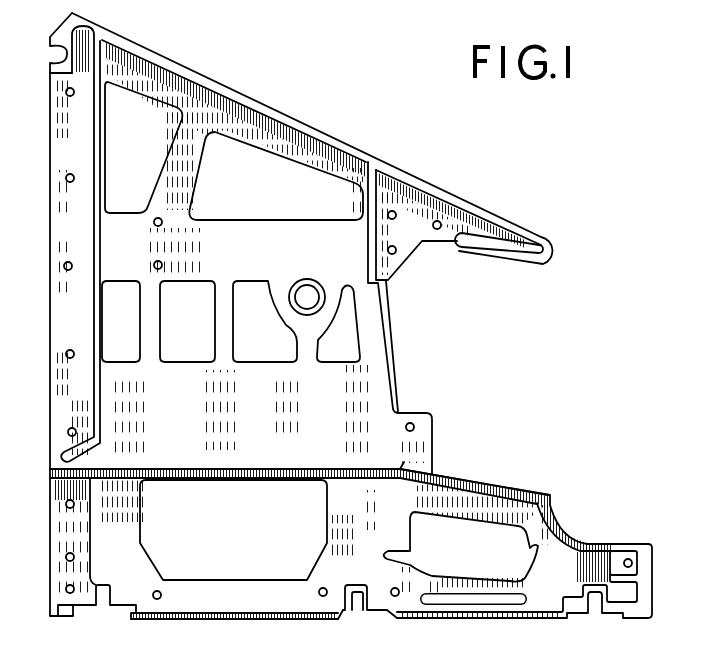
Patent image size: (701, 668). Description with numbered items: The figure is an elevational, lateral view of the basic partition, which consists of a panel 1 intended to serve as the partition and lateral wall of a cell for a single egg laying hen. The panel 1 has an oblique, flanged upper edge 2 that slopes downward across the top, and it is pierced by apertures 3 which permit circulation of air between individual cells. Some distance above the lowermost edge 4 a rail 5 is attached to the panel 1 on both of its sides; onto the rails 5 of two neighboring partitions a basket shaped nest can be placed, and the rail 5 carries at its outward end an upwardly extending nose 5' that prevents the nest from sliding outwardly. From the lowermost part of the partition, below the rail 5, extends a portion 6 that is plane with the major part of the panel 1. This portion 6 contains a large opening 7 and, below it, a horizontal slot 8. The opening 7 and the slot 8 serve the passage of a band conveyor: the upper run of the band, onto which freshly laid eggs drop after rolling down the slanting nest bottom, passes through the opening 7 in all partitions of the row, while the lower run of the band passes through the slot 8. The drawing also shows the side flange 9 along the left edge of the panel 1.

The panel 1 is at (462, 361).
The oblique flanged upper edge 2 is at (190, 68).
The apertures 3 is at (138, 157).
The lowermost edge 4 is at (222, 622).
The rail 5 is at (293, 467).
The intermediate rail step 5' is at (386, 449).
The portion 6 is at (477, 483).
The opening 7 is at (472, 559).
The horizontal slot 8 is at (478, 603).
The side flange 9 is at (50, 321).